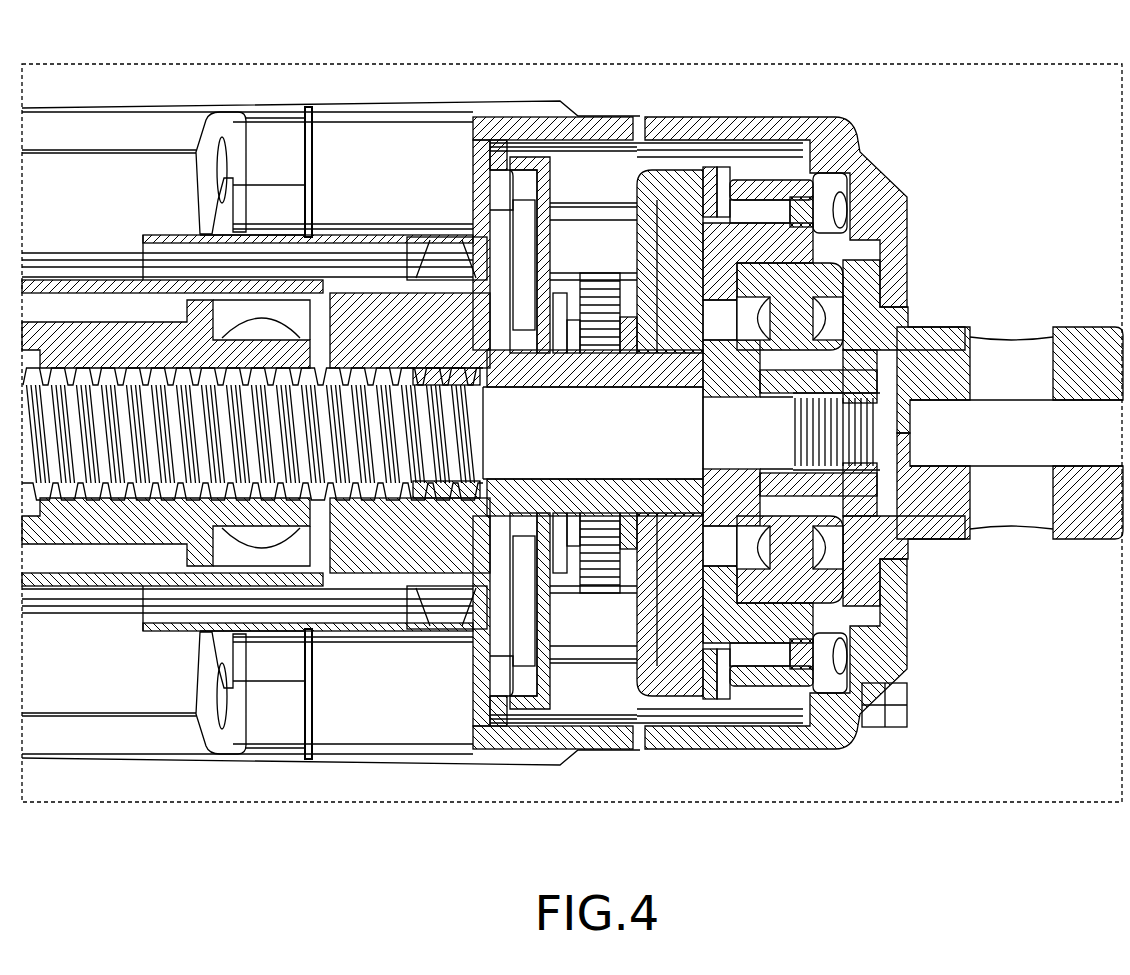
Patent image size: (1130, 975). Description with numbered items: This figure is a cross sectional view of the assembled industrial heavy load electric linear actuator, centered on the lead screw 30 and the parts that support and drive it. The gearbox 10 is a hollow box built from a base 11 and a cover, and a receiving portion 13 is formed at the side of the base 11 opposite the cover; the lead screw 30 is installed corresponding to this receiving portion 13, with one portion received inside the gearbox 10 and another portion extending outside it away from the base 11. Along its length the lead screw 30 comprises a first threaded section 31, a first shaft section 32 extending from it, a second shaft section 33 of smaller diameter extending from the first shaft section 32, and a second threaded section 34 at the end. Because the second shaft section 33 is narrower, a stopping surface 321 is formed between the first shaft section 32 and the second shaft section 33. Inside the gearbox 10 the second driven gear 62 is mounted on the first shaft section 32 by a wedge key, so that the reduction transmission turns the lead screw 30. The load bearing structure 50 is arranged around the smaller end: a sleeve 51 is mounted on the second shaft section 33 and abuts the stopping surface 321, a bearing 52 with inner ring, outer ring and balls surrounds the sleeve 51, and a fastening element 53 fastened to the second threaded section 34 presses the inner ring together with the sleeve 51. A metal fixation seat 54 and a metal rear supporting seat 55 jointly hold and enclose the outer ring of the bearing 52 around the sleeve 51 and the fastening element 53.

The gearbox 10 is at (575, 450).
The base 11 is at (575, 117).
The receiving portion 13 is at (308, 106).
The lead screw 30 is at (417, 524).
The first threaded section 31 is at (240, 490).
The first shaft section 32 is at (533, 470).
The stopping surface 321 is at (600, 600).
The second shaft section 33 is at (650, 575).
The second threaded section 34 is at (737, 450).
The load bearing structure 50 is at (882, 410).
The sleeve 51 is at (770, 208).
The bearing 52 is at (835, 280).
The fastening element 53 is at (905, 343).
The fixation seat 54 is at (840, 128).
The rear supporting seat 55 is at (1010, 395).
The second driven gear 62 is at (676, 190).